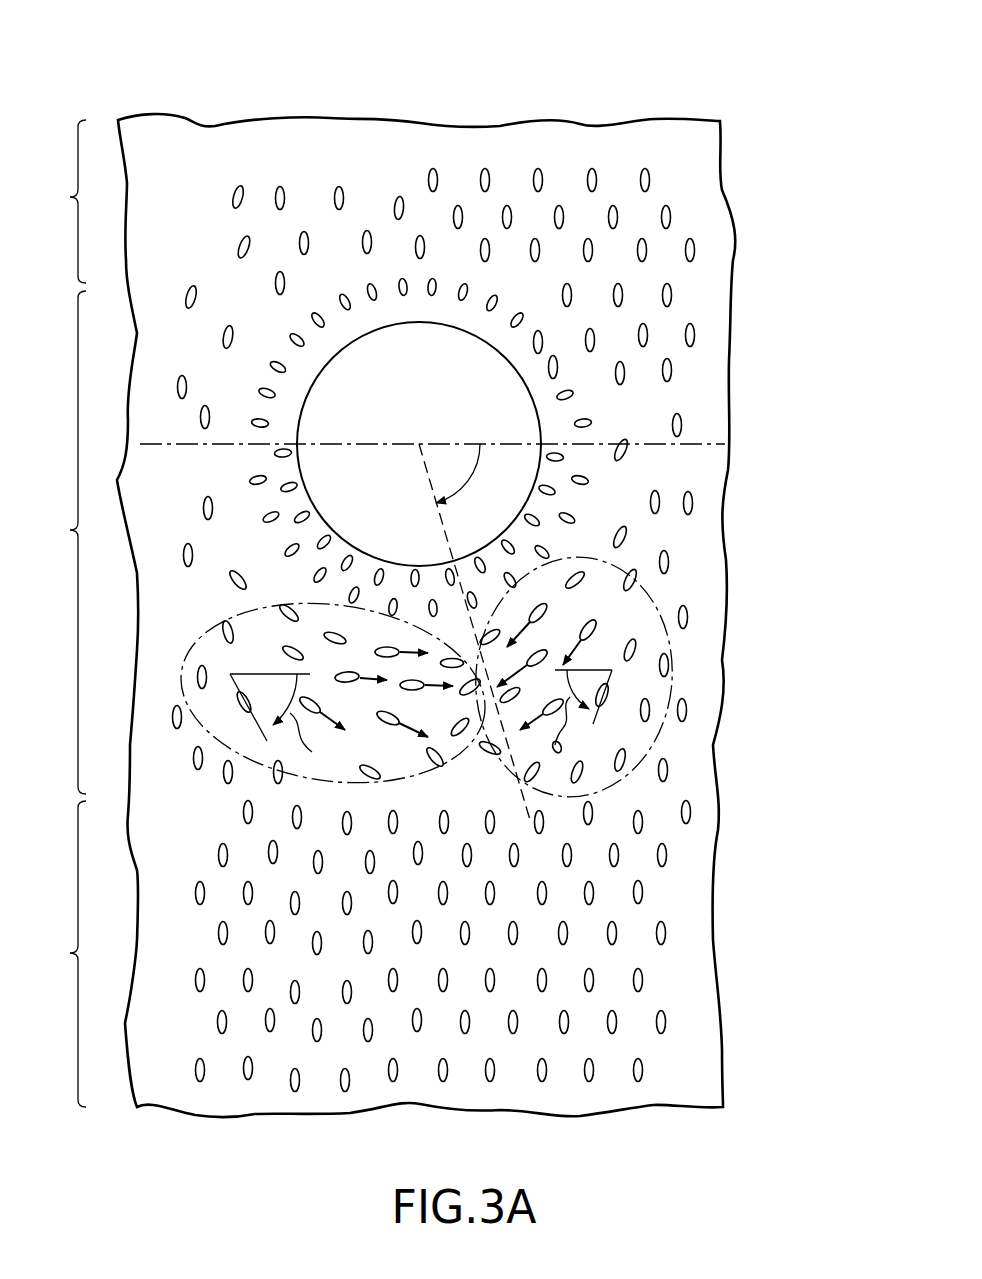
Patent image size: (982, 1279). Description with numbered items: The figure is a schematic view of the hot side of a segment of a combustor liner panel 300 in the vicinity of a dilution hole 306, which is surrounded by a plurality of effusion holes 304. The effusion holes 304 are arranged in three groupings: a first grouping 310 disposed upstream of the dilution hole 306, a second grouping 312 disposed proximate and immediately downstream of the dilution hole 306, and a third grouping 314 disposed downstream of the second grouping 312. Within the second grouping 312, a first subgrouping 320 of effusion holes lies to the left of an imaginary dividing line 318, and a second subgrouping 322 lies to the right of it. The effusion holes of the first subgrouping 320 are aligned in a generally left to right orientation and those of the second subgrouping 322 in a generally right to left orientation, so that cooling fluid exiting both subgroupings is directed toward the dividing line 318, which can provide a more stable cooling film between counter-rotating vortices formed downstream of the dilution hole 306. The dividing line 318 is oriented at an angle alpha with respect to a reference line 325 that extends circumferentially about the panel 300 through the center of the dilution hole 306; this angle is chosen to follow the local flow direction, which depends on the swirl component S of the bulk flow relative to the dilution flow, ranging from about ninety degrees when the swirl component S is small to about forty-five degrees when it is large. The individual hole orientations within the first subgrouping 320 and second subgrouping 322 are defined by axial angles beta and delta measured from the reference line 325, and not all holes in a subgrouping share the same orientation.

The panel 300 is at (126, 76).
The swirl component S is at (317, 105).
The effusion holes 304 is at (695, 250).
The dilution hole 306 is at (419, 444).
The first grouping 310 is at (55, 201).
The second grouping 312 is at (57, 542).
The third grouping 314 is at (57, 954).
The dividing line 318 is at (446, 541).
The first subgrouping 320 is at (182, 658).
The second subgrouping 322 is at (677, 640).
The reference line 325 is at (725, 444).